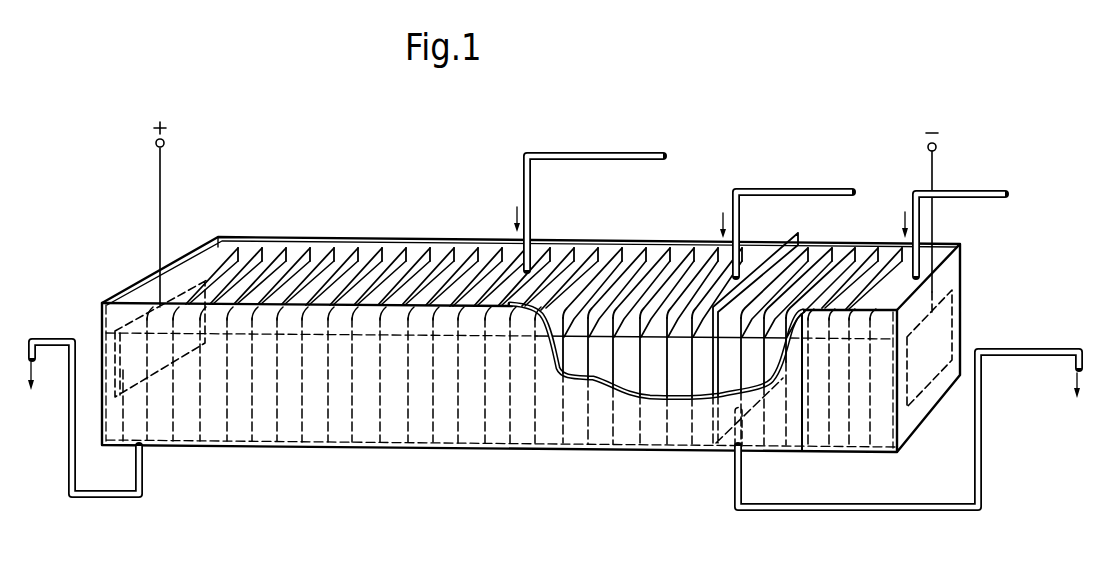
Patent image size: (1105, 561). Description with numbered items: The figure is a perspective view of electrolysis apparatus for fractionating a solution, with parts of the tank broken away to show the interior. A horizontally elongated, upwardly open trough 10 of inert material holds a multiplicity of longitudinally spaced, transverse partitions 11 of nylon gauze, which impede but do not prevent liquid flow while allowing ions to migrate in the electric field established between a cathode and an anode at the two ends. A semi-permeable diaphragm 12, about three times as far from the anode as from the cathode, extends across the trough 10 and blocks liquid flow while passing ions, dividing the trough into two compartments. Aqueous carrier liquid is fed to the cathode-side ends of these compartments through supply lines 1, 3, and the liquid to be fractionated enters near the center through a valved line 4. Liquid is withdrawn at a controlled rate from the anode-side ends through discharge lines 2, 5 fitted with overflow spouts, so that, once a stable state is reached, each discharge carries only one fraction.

The supply line 1 is at (912, 202).
The discharge line 2 is at (735, 482).
The supply line 3 is at (731, 203).
The valved line 4 is at (533, 198).
The discharge line 5 is at (144, 487).
The trough 10 is at (458, 454).
The partitions 11 is at (303, 256).
The semi-permeable diaphragm 12 is at (797, 238).